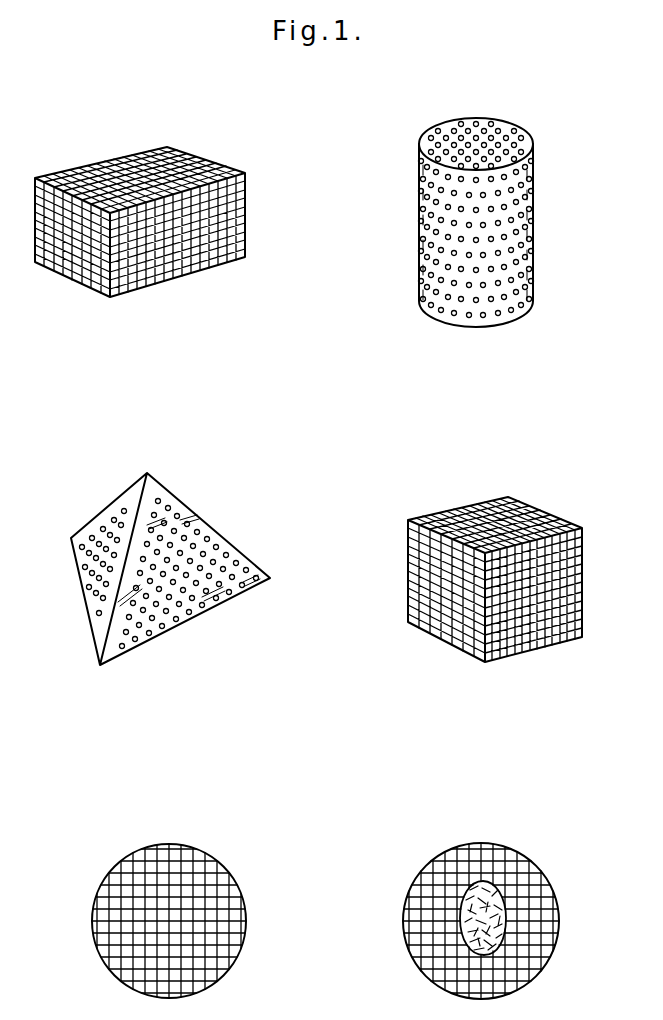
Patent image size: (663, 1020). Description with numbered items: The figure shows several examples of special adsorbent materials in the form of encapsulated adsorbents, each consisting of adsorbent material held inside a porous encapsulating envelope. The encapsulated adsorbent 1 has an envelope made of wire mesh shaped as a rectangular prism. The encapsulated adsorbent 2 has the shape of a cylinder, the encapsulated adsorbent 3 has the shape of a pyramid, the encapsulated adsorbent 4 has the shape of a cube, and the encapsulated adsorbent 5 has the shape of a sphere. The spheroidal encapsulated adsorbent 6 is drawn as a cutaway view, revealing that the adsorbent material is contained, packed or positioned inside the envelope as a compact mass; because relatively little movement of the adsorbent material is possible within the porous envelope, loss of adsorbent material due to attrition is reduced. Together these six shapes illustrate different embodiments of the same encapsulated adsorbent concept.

The encapsulated adsorbent 1 is at (167, 147).
The encapsulated adsorbent 2 is at (480, 118).
The encapsulated adsorbent 3 is at (163, 485).
The encapsulated adsorbent 4 is at (508, 497).
The encapsulated adsorbent 5 is at (175, 845).
The spheroidal encapsulated adsorbent 6 is at (495, 845).